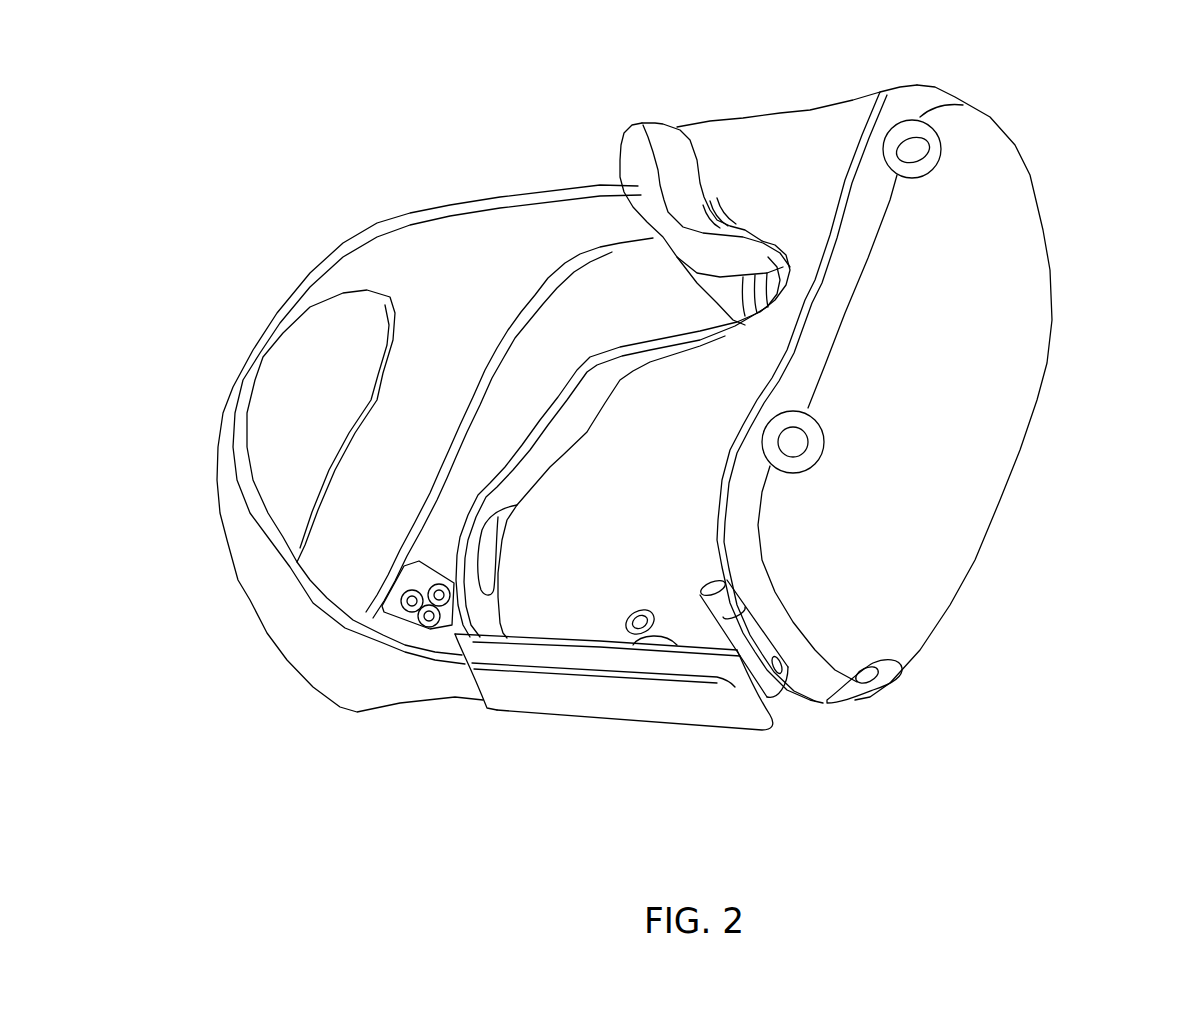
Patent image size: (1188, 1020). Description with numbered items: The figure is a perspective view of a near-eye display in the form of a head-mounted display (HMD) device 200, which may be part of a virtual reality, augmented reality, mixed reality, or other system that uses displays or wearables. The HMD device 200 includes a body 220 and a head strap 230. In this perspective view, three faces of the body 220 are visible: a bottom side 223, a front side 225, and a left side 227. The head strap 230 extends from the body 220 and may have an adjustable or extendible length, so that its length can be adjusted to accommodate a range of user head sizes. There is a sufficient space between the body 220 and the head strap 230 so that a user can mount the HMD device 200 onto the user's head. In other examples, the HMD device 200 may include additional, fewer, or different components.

The head-mounted display (HMD) device 200 is at (487, 80).
The body 220 is at (885, 359).
The bottom side 223 is at (777, 135).
The front side 225 is at (967, 652).
The left side 227 is at (607, 703).
The head strap 230 is at (261, 583).